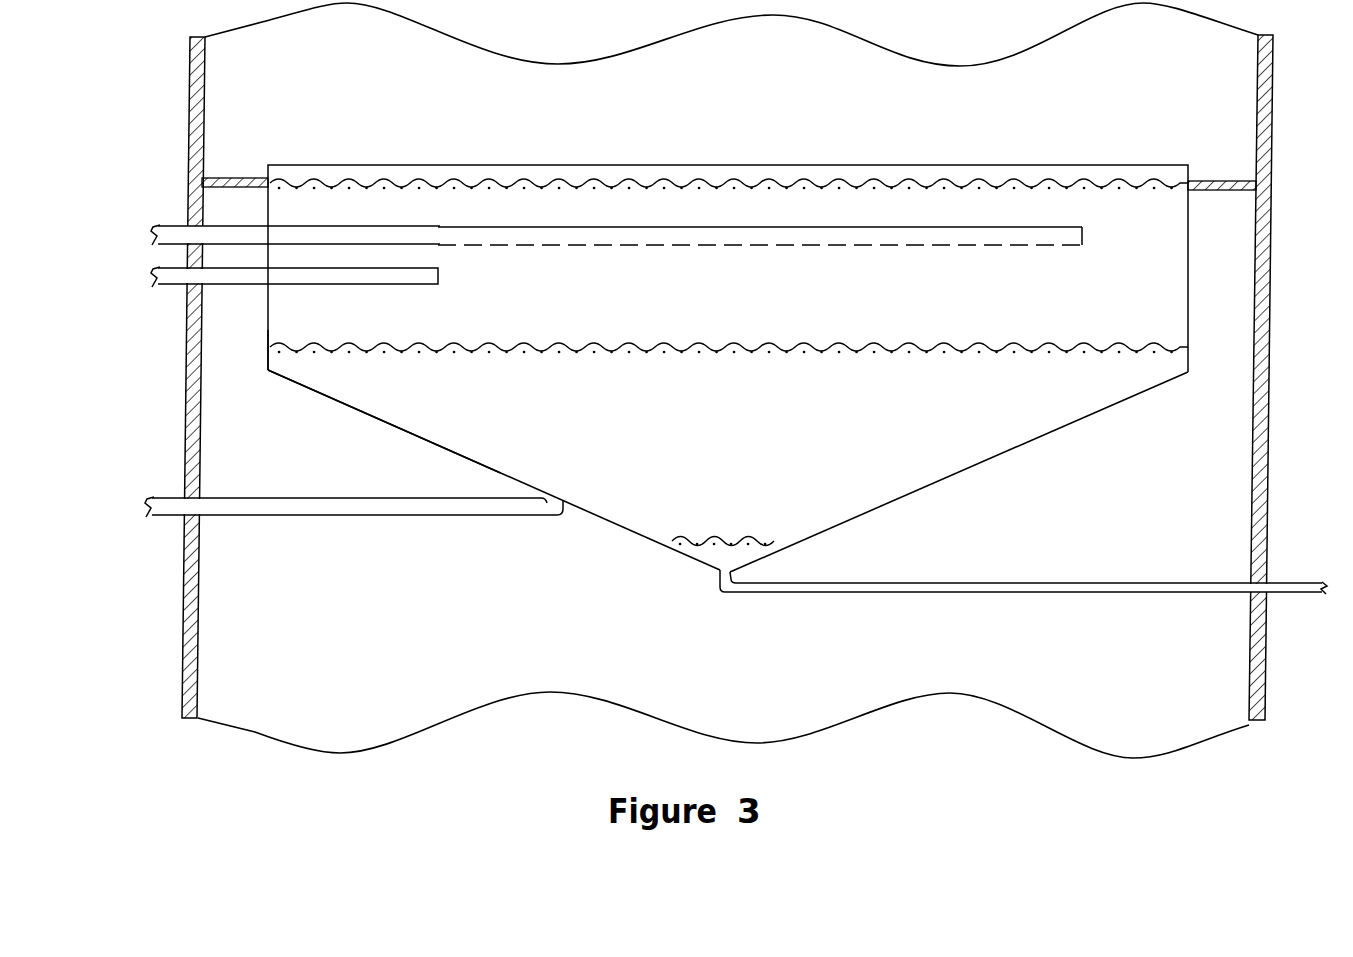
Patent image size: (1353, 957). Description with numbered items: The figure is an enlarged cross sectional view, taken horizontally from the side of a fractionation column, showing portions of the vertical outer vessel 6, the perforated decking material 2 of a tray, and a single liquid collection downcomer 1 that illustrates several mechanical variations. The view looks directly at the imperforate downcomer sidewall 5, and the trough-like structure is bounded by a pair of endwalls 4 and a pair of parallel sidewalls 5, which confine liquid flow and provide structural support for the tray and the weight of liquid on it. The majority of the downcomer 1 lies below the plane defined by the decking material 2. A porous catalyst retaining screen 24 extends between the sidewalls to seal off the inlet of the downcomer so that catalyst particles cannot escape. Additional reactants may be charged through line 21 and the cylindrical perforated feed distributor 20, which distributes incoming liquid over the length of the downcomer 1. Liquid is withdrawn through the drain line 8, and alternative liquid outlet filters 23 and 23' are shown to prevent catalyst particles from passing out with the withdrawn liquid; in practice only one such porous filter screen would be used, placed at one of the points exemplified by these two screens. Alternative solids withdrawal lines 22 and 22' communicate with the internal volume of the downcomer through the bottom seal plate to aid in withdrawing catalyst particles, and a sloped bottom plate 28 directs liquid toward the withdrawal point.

The downcomer 1 is at (728, 253).
The decking material 2 is at (729, 169).
The endwalls 4 is at (250, 351).
The sidewalls 5 is at (366, 385).
The outer vessel 6 is at (1280, 377).
The drain line 8 is at (1023, 576).
The feed distributor 20 is at (760, 223).
The line 21 is at (288, 221).
The solids withdrawal line 22 is at (283, 295).
The solids withdrawal line 22' is at (343, 492).
The liquid outlet filter 23 is at (729, 397).
The liquid outlet filter 23' is at (710, 560).
The catalyst retaining screen 24 is at (729, 147).
The sloped bottom plate 28 is at (728, 471).